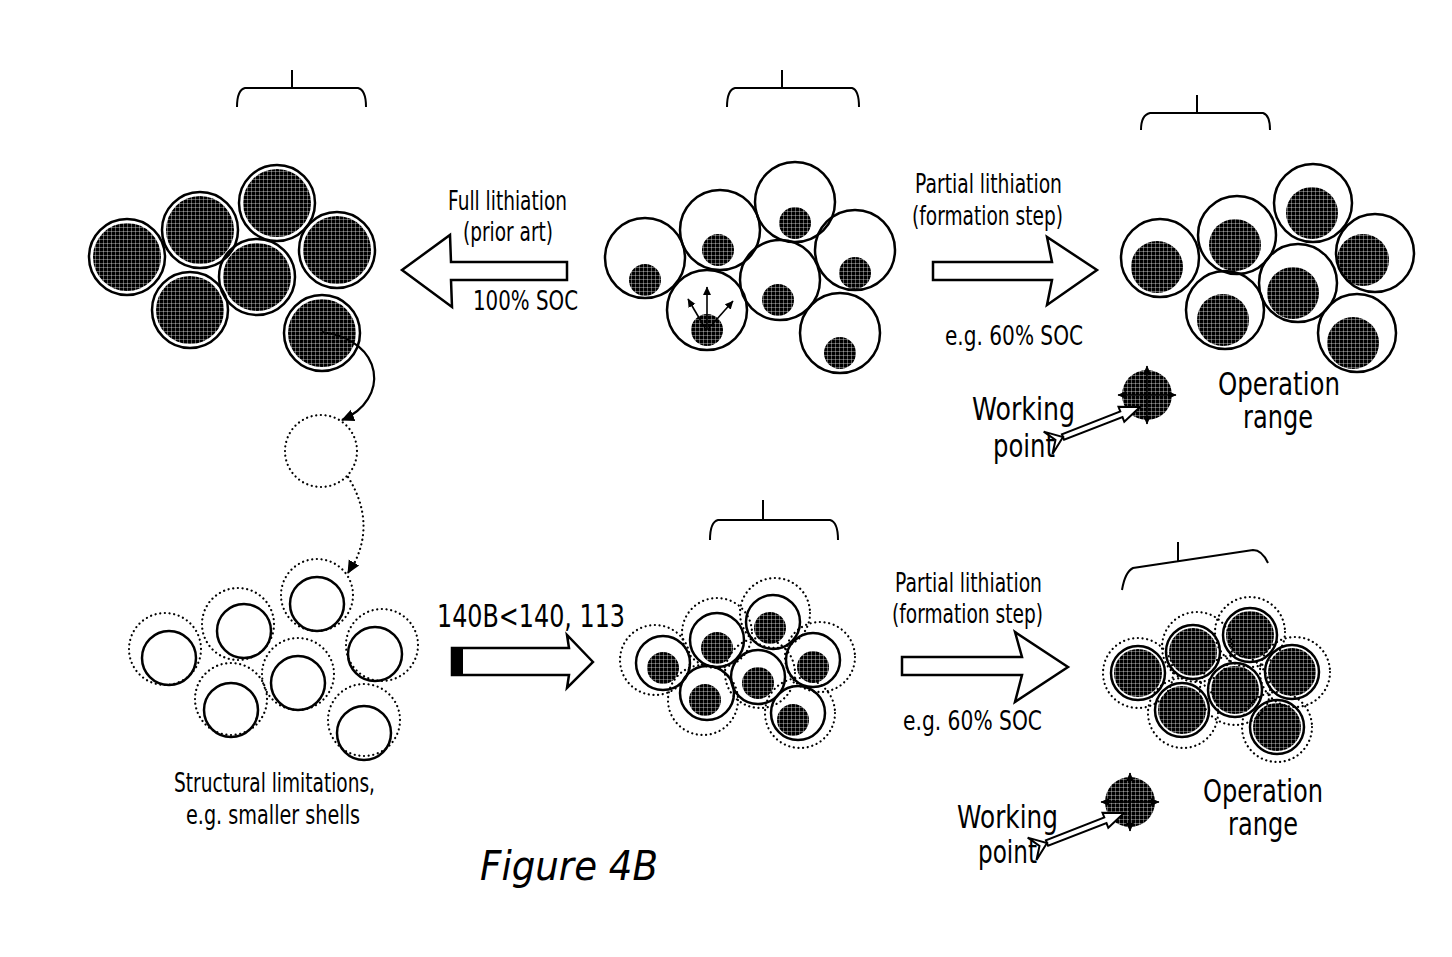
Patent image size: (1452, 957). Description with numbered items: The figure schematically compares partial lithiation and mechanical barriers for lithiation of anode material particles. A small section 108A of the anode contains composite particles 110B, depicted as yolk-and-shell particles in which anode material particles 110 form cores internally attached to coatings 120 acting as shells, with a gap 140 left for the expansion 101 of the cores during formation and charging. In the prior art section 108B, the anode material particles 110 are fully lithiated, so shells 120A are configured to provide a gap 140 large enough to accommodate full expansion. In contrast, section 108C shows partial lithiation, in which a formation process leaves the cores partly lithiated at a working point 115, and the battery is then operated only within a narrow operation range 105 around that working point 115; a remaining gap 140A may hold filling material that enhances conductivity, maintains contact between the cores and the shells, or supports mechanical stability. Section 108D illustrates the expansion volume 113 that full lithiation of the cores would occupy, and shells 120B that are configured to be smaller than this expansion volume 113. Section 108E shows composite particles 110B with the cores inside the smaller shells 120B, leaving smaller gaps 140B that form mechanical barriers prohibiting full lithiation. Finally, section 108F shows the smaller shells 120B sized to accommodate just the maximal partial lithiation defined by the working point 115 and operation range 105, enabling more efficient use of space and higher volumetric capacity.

The small section of anode (prior art, full lithiation) 108B is at (138, 152).
The composite particles 110B is at (753, 308).
The shells (prior art) 120A is at (291, 165).
The anode material particles 110 is at (314, 198).
The small section of anode 108A is at (634, 153).
The coatings (shells) 120 is at (788, 162).
The gap 140 is at (682, 317).
The expansion 101 is at (742, 334).
The small section of anode (partial lithiation) 108C is at (1128, 153).
The remaining gap 140A is at (1207, 287).
The operation range 105 is at (1173, 395).
The working point 115 is at (1097, 437).
The expansion volume 113 is at (285, 446).
The small section of anode (structural limitation) 108D is at (139, 583).
The smaller shells 120B is at (238, 606).
The small section of anode (smaller shells, non-lithiated) 108E is at (666, 588).
The smaller gaps 140B is at (637, 680).
The small section of anode (smaller shells, partly lithiated) 108F is at (1106, 617).